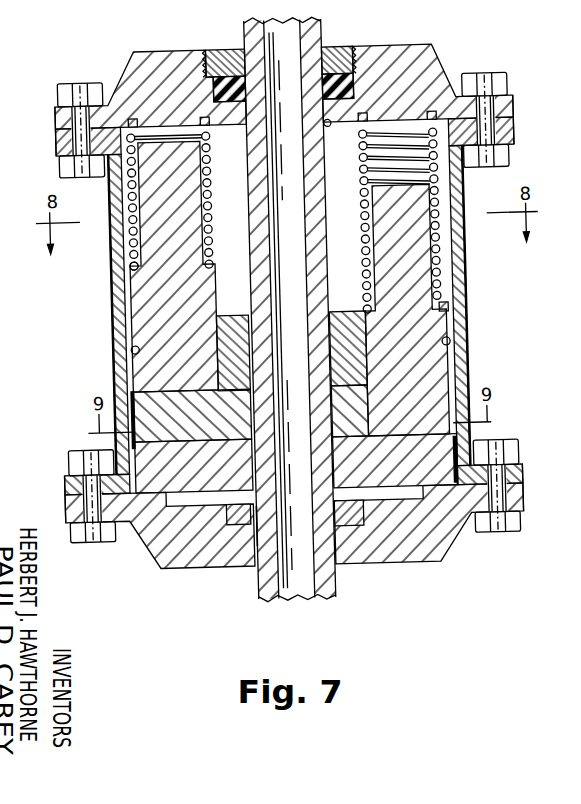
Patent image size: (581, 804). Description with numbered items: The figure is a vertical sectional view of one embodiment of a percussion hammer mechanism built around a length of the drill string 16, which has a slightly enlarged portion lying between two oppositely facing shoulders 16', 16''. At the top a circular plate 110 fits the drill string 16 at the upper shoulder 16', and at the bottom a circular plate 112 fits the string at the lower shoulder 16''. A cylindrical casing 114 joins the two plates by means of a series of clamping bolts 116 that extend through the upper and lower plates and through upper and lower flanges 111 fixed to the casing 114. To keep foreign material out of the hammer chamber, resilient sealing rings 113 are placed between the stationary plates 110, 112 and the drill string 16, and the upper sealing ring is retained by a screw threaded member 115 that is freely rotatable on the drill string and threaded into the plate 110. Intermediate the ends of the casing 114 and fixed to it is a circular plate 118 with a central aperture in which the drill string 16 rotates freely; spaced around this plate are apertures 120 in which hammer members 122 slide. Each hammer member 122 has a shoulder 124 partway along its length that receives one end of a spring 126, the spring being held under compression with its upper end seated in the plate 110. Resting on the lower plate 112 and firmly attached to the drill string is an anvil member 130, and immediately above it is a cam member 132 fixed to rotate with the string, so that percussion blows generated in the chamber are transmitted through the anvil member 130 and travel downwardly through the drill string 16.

The drill string 16 is at (310, 303).
The shoulder 16' is at (339, 139).
The shoulder 16'' is at (218, 552).
The circular plate 110 is at (428, 64).
The flange 111 is at (60, 144).
The circular plate 112 is at (383, 560).
The resilient sealing ring 113 is at (363, 75).
The cylindrical casing 114 is at (459, 276).
The screw threaded member 115 is at (336, 59).
The clamping bolt 116 is at (85, 110).
The circular plate 118 is at (342, 318).
The aperture 120 is at (130, 344).
The hammer member 122 is at (137, 289).
The shoulder 124 is at (131, 259).
The spring 126 is at (129, 197).
The anvil member 130 is at (341, 466).
The cam member 132 is at (230, 407).